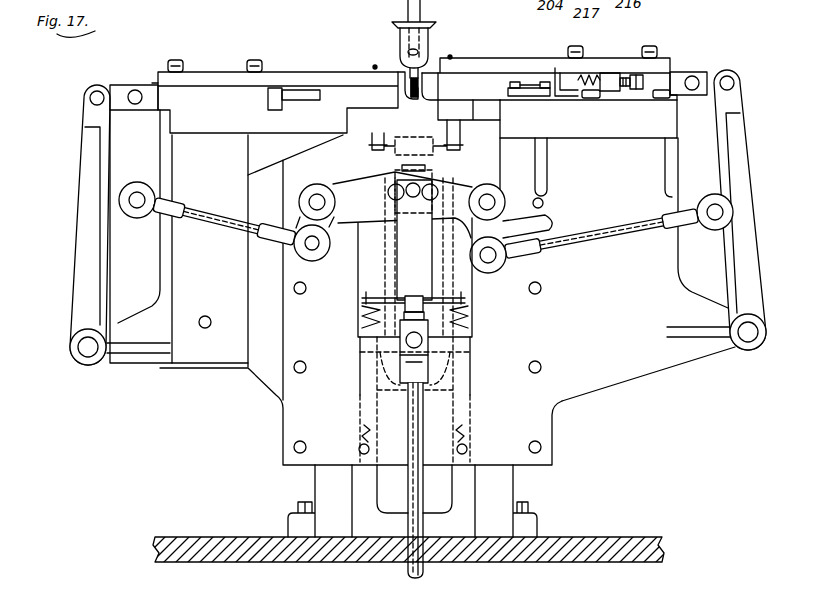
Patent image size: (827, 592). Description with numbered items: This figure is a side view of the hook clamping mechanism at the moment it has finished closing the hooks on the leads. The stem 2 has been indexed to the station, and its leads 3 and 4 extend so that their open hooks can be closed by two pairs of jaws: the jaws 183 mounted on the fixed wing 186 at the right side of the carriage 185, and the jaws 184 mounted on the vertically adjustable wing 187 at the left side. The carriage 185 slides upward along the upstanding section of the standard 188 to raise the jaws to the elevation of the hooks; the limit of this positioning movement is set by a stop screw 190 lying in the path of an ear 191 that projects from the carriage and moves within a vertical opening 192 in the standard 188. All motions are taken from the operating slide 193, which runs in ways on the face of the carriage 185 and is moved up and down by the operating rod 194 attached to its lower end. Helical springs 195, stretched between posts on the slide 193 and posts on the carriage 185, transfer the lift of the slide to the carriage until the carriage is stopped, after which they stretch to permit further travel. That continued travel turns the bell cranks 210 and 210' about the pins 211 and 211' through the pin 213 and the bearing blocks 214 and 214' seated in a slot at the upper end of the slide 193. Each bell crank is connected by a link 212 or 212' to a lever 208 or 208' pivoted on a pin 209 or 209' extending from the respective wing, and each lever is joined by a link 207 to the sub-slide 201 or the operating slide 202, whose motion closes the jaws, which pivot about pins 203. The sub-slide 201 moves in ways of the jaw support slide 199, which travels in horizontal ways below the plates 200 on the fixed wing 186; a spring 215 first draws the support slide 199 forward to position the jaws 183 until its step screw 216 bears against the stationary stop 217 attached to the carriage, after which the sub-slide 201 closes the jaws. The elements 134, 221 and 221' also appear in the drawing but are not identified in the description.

The stem 2 is at (400, 33).
The lead 3 is at (424, 65).
The lead 4 is at (404, 68).
The tube pinch point 134 is at (420, 95).
The jaw 183 is at (436, 66).
The jaw 184 is at (396, 68).
The carriage 185 is at (292, 421).
The fixed wing 186 is at (632, 372).
The vertically adjustable wing 187 is at (176, 370).
The standard 188 is at (513, 485).
The screw 190 is at (467, 360).
The ear 191 is at (360, 352).
The vertical opening 192 is at (378, 475).
The operating slide 193 is at (390, 268).
The operating rod 194 is at (403, 573).
The helical springs 195 is at (368, 320).
The jaw support slide 199 is at (480, 117).
The plate 200 is at (673, 97).
The sub-slide 201 is at (675, 70).
The operating slide 202 is at (152, 82).
The pin 203 is at (450, 57).
The link 207 is at (116, 85).
The lever 208 is at (752, 210).
The lever 208' is at (66, 225).
The pin 209 is at (766, 325).
The pin 209' is at (82, 363).
The bell crank 210 is at (446, 205).
The bell crank 210' is at (312, 197).
The pin 211 is at (400, 216).
The pin 211' is at (296, 192).
The link 212 is at (618, 232).
The link 212' is at (207, 222).
The pin 213 is at (403, 192).
The bearing block 214 is at (426, 178).
The bearing block 214' is at (393, 175).
The spring 215 is at (432, 137).
The step screw 216 is at (590, 75).
The stationary stop 217 is at (557, 66).
The right cross bar 221 is at (549, 80).
The left cross bar 221' is at (278, 84).